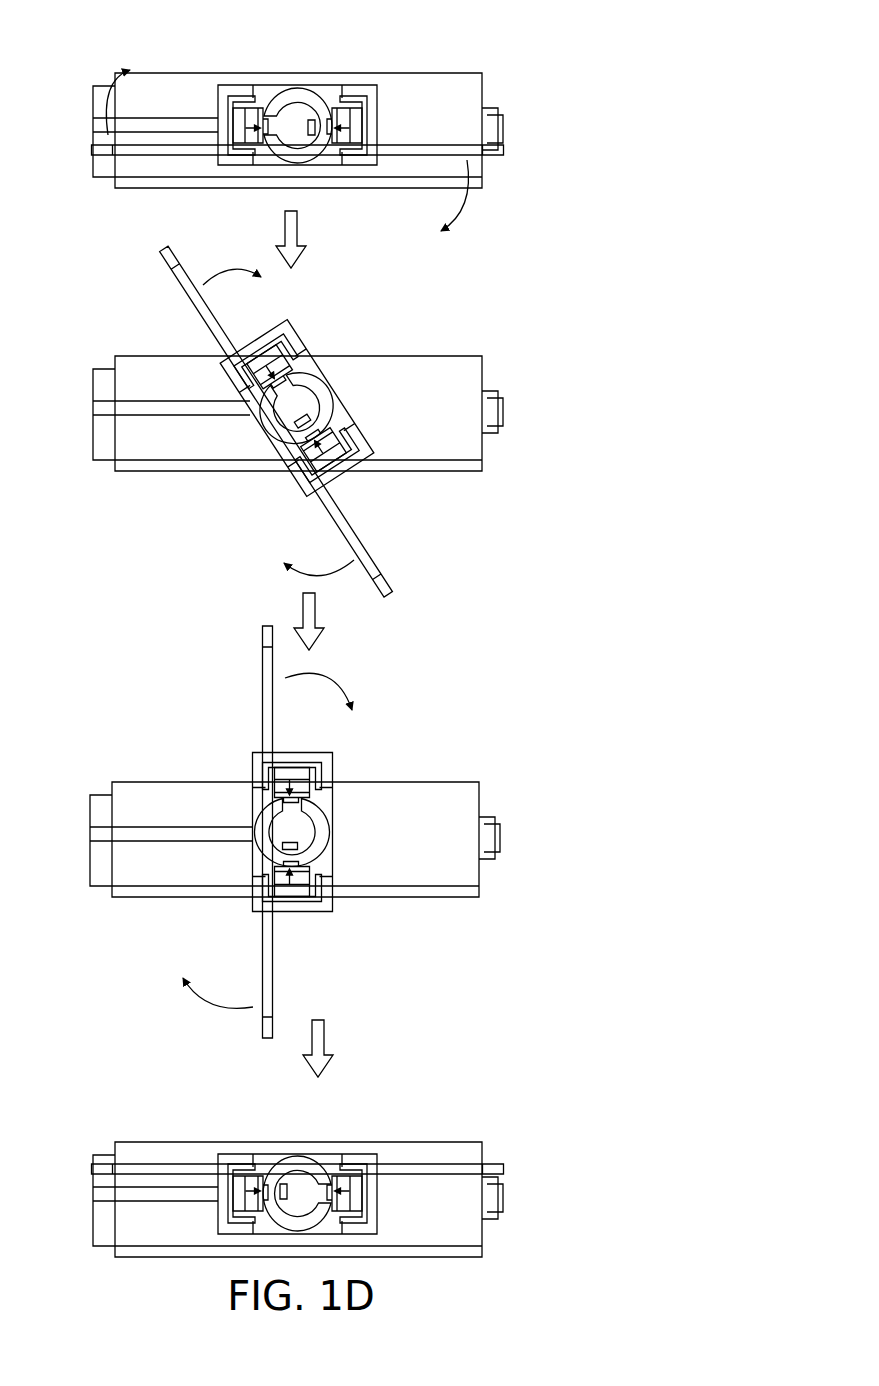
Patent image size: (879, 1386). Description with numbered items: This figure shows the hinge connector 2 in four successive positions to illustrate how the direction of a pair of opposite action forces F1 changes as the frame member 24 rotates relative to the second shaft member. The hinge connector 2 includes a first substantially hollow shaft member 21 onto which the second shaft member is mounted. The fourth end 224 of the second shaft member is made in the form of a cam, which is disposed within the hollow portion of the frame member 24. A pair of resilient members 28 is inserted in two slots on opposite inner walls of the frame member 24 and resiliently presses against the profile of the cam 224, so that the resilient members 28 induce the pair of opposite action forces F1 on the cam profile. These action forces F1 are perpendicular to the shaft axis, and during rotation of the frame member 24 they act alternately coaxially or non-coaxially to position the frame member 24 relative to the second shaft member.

The hinge connector 2 is at (301, 45).
The first substantially hollow shaft member 21 is at (438, 90).
The frame member 24 is at (374, 88).
The resilient members 28 is at (246, 106).
The fourth end (cam) 224 is at (280, 100).
The opposite action forces F1 is at (245, 128).